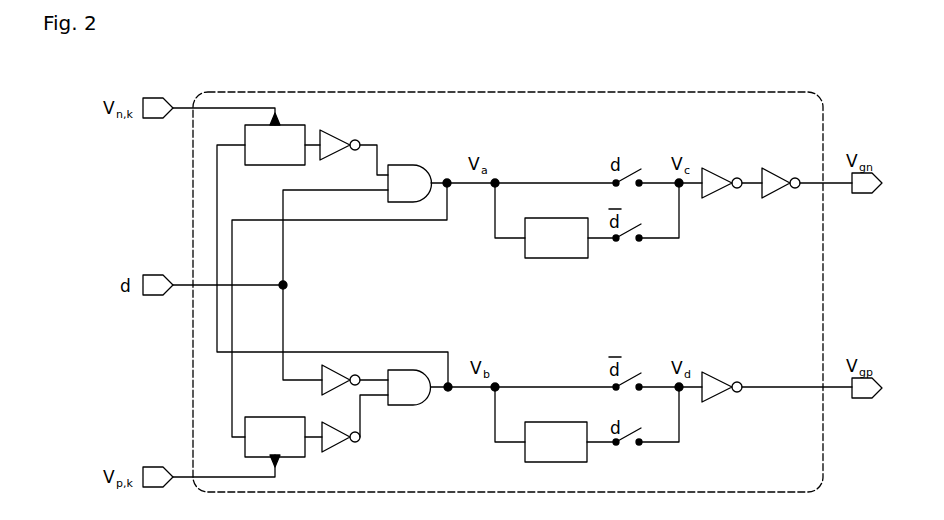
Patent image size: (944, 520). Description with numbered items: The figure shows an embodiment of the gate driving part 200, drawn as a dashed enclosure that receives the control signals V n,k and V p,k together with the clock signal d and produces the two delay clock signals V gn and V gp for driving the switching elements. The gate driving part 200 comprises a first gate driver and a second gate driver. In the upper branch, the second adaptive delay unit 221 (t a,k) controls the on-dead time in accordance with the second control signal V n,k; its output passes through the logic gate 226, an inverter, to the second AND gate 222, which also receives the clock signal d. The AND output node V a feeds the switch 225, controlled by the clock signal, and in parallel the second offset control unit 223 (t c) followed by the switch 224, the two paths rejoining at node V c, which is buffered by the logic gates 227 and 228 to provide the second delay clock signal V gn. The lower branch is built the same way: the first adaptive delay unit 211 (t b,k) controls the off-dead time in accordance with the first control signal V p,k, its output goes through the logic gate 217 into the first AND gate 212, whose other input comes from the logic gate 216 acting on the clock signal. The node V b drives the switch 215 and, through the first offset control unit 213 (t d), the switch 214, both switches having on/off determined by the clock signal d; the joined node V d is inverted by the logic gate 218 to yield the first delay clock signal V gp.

The gate driving part 200 is at (508, 276).
The first adaptive delay unit 211 is at (300, 457).
The first AND gate 212 is at (416, 405).
The first offset control unit 213 is at (525, 462).
The switch 214 is at (631, 448).
The switch 215 is at (634, 372).
The logic gate 216 is at (337, 366).
The logic gate 217 is at (350, 447).
The logic gate 218 is at (716, 400).
The second adaptive delay unit 221 is at (303, 126).
The second AND gate 222 is at (414, 165).
The second offset control unit 223 is at (556, 258).
The switch 224 is at (632, 246).
The switch 225 is at (633, 167).
The logic gate 226 is at (347, 139).
The logic gate 227 is at (716, 196).
The logic gate 228 is at (775, 196).